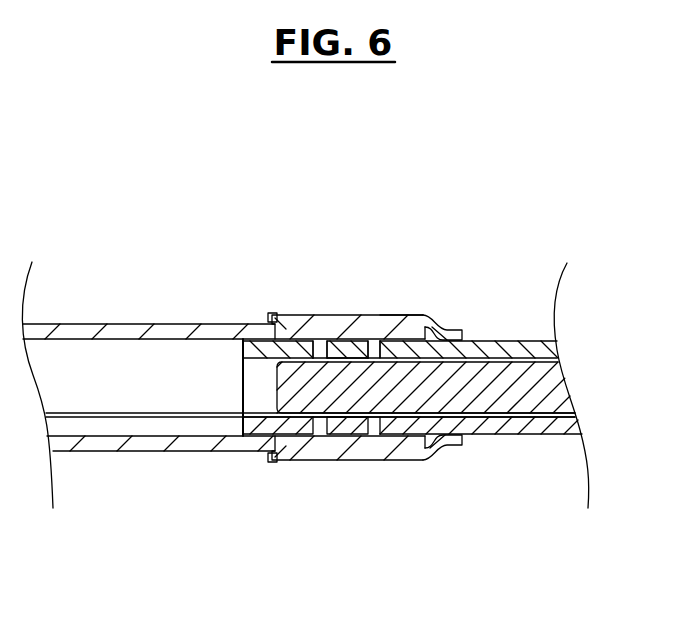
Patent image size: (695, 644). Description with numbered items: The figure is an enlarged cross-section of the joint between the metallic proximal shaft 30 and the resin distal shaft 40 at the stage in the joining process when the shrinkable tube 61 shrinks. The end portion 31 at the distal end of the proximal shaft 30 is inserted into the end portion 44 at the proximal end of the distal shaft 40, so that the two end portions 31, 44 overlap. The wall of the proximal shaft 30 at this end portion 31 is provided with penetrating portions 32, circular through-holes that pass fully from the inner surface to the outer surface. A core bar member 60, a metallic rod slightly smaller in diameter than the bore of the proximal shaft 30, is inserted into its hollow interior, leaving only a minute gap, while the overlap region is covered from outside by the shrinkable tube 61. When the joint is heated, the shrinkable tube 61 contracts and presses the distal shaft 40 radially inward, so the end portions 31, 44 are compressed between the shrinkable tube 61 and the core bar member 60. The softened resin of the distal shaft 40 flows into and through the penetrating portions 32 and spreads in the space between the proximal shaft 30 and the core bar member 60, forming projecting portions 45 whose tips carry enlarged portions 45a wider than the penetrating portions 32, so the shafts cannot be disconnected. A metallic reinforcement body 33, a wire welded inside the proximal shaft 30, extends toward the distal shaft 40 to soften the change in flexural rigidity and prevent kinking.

The proximal shaft 30 is at (478, 340).
The end portion of the proximal shaft 31 is at (410, 317).
The penetrating portions 32 is at (270, 455).
The reinforcement body 33 is at (242, 342).
The distal shaft 40 is at (128, 324).
The end portion of the distal shaft 44 is at (253, 325).
The projecting portions 45 is at (334, 362).
The enlarged portion 45a is at (355, 360).
The core bar member 60 is at (518, 437).
The shrinkable tube 61 is at (450, 325).